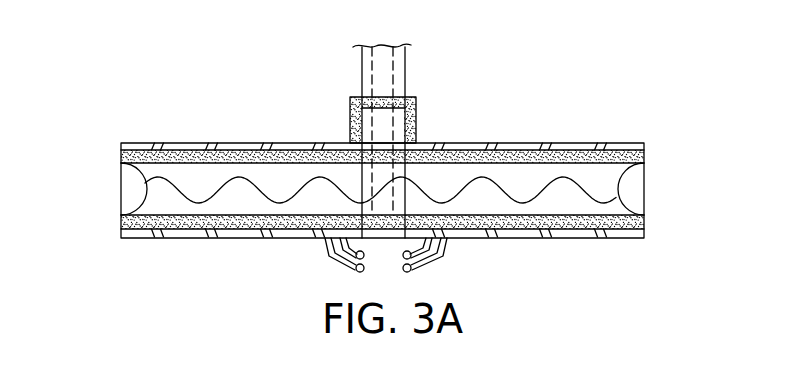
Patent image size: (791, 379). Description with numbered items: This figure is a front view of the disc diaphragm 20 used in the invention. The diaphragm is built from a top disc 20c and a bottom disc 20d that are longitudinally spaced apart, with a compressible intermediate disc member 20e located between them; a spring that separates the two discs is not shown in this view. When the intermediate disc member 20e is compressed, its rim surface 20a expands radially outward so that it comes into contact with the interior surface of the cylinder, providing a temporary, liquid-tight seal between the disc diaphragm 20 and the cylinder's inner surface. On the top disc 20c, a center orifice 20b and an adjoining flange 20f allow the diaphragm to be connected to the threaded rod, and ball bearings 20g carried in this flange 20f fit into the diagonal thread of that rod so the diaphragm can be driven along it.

The disc diaphragm 20 is at (588, 92).
The rim surface 20a is at (121, 157).
The center orifice 20b is at (350, 264).
The top disc 20c is at (644, 157).
The bottom disc 20d is at (644, 222).
The compressible intermediate disc member 20e is at (618, 189).
The flange 20f is at (416, 133).
The ball bearings 20g is at (350, 108).